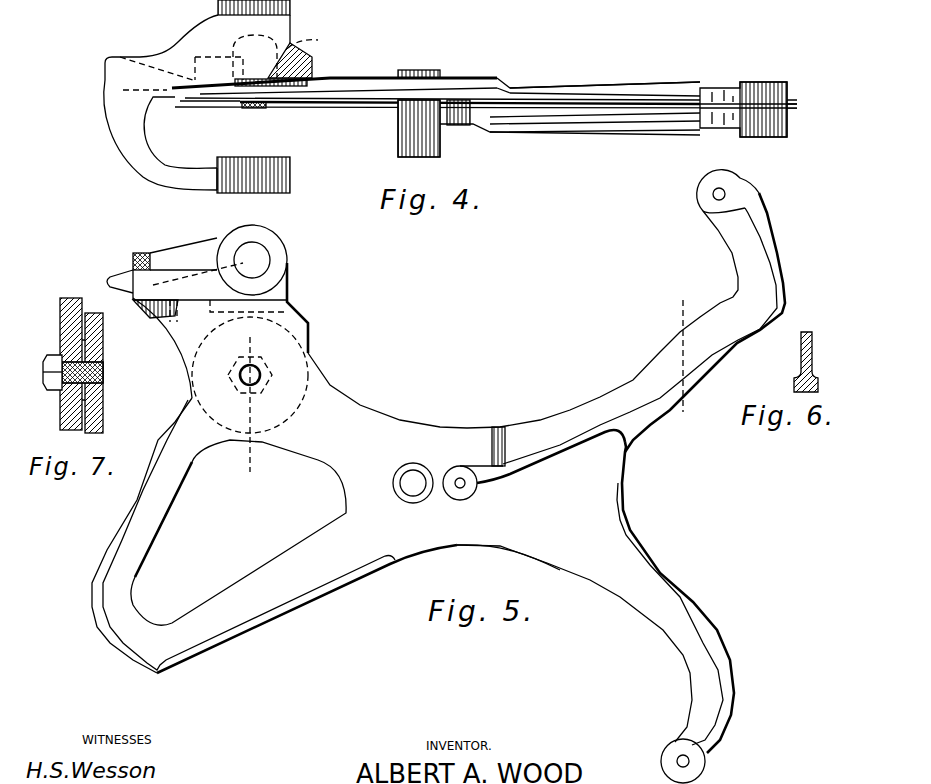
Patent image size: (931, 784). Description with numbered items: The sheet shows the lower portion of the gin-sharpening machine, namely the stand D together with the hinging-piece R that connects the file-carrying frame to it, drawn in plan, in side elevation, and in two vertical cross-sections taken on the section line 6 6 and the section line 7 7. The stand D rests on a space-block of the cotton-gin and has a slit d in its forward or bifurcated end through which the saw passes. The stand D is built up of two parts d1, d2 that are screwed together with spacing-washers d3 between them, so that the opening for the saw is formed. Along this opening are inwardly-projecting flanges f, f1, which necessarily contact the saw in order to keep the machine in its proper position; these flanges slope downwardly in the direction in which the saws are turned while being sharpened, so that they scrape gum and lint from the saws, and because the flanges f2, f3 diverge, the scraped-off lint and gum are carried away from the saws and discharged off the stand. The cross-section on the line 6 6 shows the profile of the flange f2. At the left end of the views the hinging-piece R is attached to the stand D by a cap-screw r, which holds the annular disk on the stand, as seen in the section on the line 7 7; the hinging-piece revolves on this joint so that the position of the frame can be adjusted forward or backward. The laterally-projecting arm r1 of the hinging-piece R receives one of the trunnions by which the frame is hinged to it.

In FIG. 4, the stand D is at (457, 78).
In FIG. 5, the stand D is at (438, 476).
In FIG. 7, the stand D is at (103, 407).
In FIG. 4, the slit d is at (797, 106).
In FIG. 4, the stand part d1 is at (613, 80).
In FIG. 5, the stand part d1 is at (514, 547).
In FIG. 4, the stand part d2 is at (624, 131).
In FIG. 4, the spacing-washers d3 is at (468, 106).
In FIG. 4, the inwardly-projecting flange f is at (533, 97).
In FIG. 5, the inwardly-projecting flange f is at (565, 440).
In FIG. 4, the inwardly-projecting flange f1 is at (553, 108).
In FIG. 4, the diverging flange f2 is at (577, 91).
In FIG. 5, the diverging flange f2 is at (600, 397).
In FIG. 6, the diverging flange f2 is at (800, 347).
In FIG. 4, the diverging flange f3 is at (567, 123).
In FIG. 4, the hinging-piece R is at (160, 123).
In FIG. 5, the hinging-piece R is at (197, 275).
In FIG. 7, the hinging-piece R is at (57, 364).
In FIG. 4, the cap-screw r is at (308, 40).
In FIG. 5, the cap-screw r is at (252, 373).
In FIG. 7, the cap-screw r is at (103, 378).
In FIG. 4, the laterally-projecting arm r1 is at (188, 179).
In FIG. 5, the laterally-projecting arm r1 is at (273, 253).
In FIG. 5, the section line 6 6 is at (681, 361).
In FIG. 5, the section line 7 7 is at (244, 405).